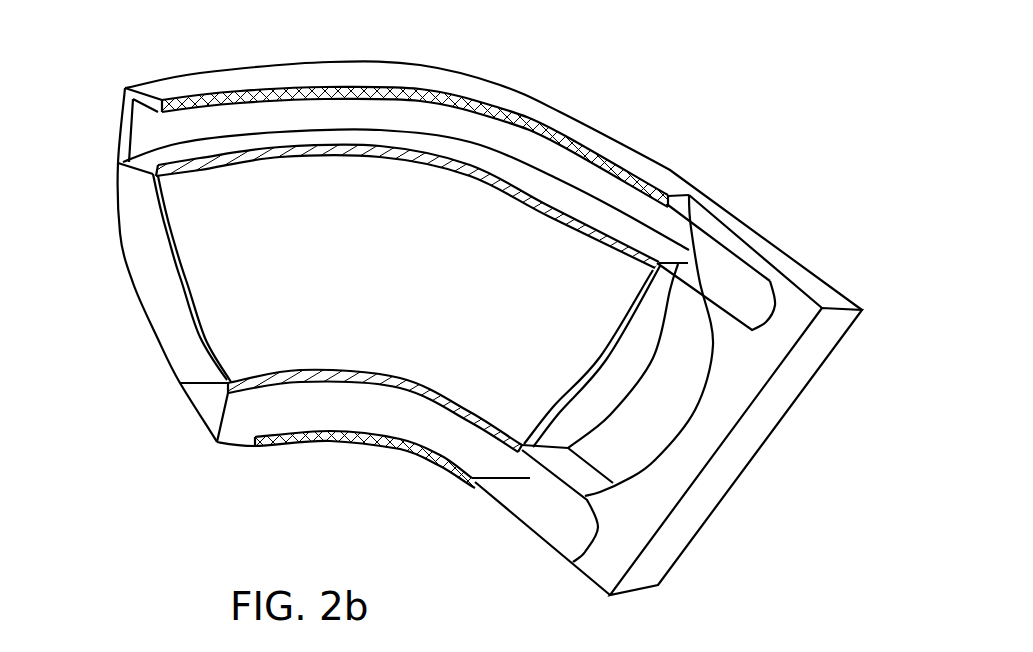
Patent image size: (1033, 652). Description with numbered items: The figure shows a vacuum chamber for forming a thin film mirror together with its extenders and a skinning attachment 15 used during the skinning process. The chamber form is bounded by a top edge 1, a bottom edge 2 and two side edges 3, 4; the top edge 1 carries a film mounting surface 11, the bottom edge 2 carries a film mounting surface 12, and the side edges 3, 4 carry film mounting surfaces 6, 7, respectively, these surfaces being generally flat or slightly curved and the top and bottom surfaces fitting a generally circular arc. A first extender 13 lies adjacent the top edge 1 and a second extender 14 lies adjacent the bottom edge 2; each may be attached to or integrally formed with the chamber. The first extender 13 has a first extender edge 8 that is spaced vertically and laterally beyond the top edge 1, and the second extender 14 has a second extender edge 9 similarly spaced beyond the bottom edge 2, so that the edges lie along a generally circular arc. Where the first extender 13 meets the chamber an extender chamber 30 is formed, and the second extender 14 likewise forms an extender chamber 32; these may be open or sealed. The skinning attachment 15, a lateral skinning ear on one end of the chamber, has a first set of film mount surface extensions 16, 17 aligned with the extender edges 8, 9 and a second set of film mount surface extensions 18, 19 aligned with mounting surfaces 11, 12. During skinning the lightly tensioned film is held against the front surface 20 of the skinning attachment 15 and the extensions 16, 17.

The top edge 1 is at (567, 223).
The bottom edge 2 is at (355, 371).
The side edge 3 is at (600, 355).
The side edge 4 is at (184, 301).
The film mounting surface 6 is at (618, 328).
The film mounting surface 7 is at (180, 277).
The first extender edge 8 is at (557, 137).
The second extender edge 9 is at (343, 437).
The film mounting surface 11 is at (545, 208).
The film mounting surface 12 is at (393, 379).
The first extender 13 is at (155, 128).
The second extender 14 is at (227, 407).
The skinning attachment 15 is at (718, 170).
The film mount surface extension 16 is at (707, 227).
The film mount surface extension 17 is at (477, 483).
The film mount surface extension 18 is at (690, 277).
The film mount surface extension 19 is at (531, 462).
The front surface 20 is at (727, 393).
The extender chamber 30 is at (227, 122).
The extender chamber 32 is at (273, 408).